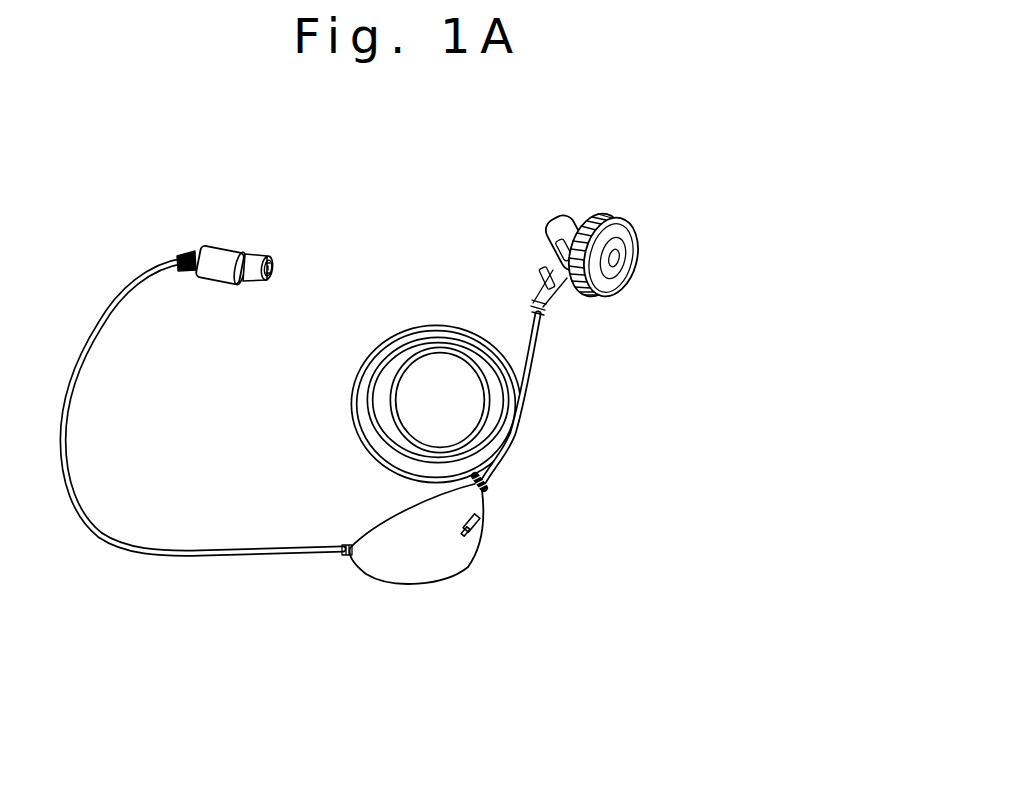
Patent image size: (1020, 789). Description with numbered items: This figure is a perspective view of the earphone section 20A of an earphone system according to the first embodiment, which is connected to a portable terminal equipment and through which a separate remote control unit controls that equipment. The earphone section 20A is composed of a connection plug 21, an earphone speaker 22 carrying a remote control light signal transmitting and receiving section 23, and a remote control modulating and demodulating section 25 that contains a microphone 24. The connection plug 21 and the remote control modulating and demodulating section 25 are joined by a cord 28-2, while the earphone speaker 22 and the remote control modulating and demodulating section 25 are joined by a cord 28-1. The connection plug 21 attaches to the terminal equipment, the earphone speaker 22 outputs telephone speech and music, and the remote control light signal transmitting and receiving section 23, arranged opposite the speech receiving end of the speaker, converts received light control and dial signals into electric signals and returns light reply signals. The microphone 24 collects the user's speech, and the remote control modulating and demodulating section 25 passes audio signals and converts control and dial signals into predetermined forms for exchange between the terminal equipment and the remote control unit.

The earphone section 20A is at (343, 587).
The connection plug 21 is at (260, 250).
The earphone speaker 22 is at (636, 233).
The remote control light signal transmitting and receiving section 23 is at (584, 214).
The microphone 24 is at (480, 523).
The remote control modulating and demodulating section 25 is at (466, 565).
The cord 28-1 is at (535, 352).
The cord 28-2 is at (75, 377).